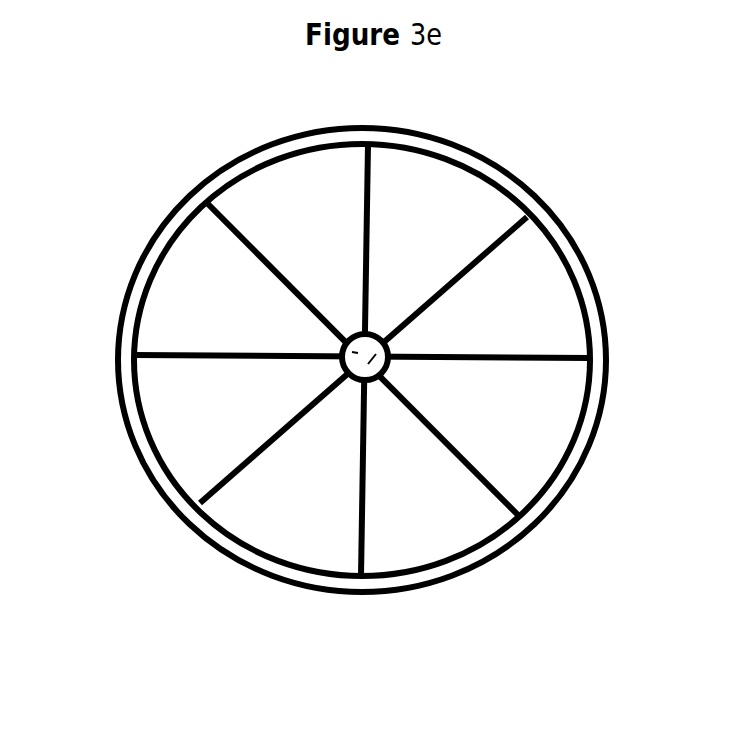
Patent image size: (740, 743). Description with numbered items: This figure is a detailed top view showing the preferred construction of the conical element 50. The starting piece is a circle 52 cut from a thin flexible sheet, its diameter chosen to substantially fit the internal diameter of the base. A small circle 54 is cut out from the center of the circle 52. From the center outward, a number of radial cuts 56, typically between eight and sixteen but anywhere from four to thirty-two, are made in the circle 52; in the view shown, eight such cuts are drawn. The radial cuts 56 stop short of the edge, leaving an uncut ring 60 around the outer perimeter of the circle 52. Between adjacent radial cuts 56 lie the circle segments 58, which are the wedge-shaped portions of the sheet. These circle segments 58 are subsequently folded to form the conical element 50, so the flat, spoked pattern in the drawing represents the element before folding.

The conical element 50 is at (363, 399).
The circle 52 is at (120, 422).
The small circle 54 is at (393, 332).
The radial cuts 56 is at (490, 492).
The circle segments 58 is at (525, 434).
The uncut ring 60 is at (257, 555).